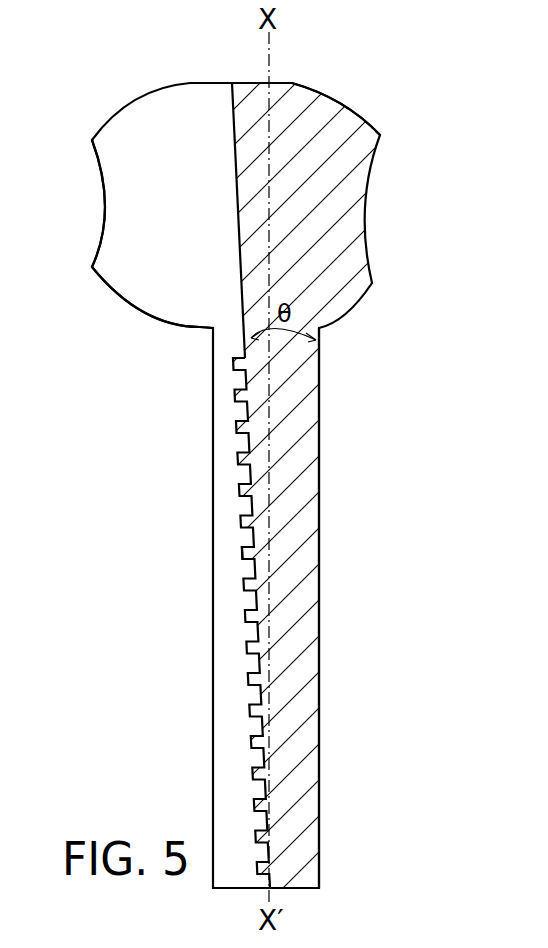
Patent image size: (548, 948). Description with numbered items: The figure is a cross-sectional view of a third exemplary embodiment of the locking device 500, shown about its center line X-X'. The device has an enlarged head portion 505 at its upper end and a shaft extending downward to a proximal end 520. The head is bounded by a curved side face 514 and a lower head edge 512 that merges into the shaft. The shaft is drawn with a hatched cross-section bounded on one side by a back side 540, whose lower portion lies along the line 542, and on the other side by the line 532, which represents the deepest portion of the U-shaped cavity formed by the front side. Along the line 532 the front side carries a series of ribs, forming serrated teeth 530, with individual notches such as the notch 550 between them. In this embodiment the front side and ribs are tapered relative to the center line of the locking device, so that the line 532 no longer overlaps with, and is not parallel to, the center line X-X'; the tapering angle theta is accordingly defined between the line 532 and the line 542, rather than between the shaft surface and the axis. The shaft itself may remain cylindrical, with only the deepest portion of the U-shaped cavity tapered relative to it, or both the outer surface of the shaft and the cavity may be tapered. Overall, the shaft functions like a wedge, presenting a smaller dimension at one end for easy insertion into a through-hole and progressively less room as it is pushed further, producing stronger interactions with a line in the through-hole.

The locking device 500 is at (332, 88).
The head portion 505 is at (128, 101).
The lower head edge 512 is at (153, 317).
The side face of head 514 is at (105, 215).
The proximal end 520 is at (386, 884).
The serrated teeth 530 is at (252, 686).
The line 532 is at (241, 262).
The shank side wall 540 is at (320, 521).
The line 542 is at (320, 713).
The tooth notch 550 is at (245, 560).